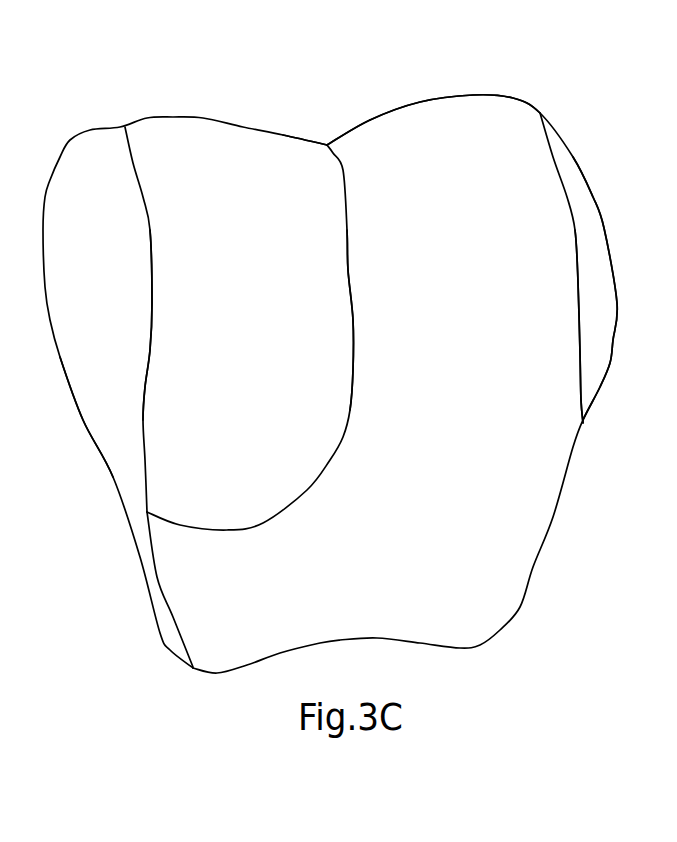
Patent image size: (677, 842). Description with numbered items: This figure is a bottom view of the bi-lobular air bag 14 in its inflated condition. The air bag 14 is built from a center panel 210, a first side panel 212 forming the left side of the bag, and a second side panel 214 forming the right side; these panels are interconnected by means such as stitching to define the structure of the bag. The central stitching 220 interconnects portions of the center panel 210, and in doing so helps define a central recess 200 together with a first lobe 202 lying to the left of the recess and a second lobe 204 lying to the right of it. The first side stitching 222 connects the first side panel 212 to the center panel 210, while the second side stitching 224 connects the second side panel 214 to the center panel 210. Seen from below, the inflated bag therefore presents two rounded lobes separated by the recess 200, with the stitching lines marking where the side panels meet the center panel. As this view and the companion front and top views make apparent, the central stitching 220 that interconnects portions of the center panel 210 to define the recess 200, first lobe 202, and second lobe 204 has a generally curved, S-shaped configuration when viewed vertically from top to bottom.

The air bag 14 is at (260, 112).
The central recess 200 is at (330, 127).
The first lobe 202 is at (182, 165).
The second lobe 204 is at (475, 160).
The center panel 210 is at (393, 195).
The first side panel 212 is at (90, 333).
The second side panel 214 is at (588, 228).
The central stitching 220 is at (348, 270).
The first side stitching 222 is at (152, 350).
The second side stitching 224 is at (578, 282).